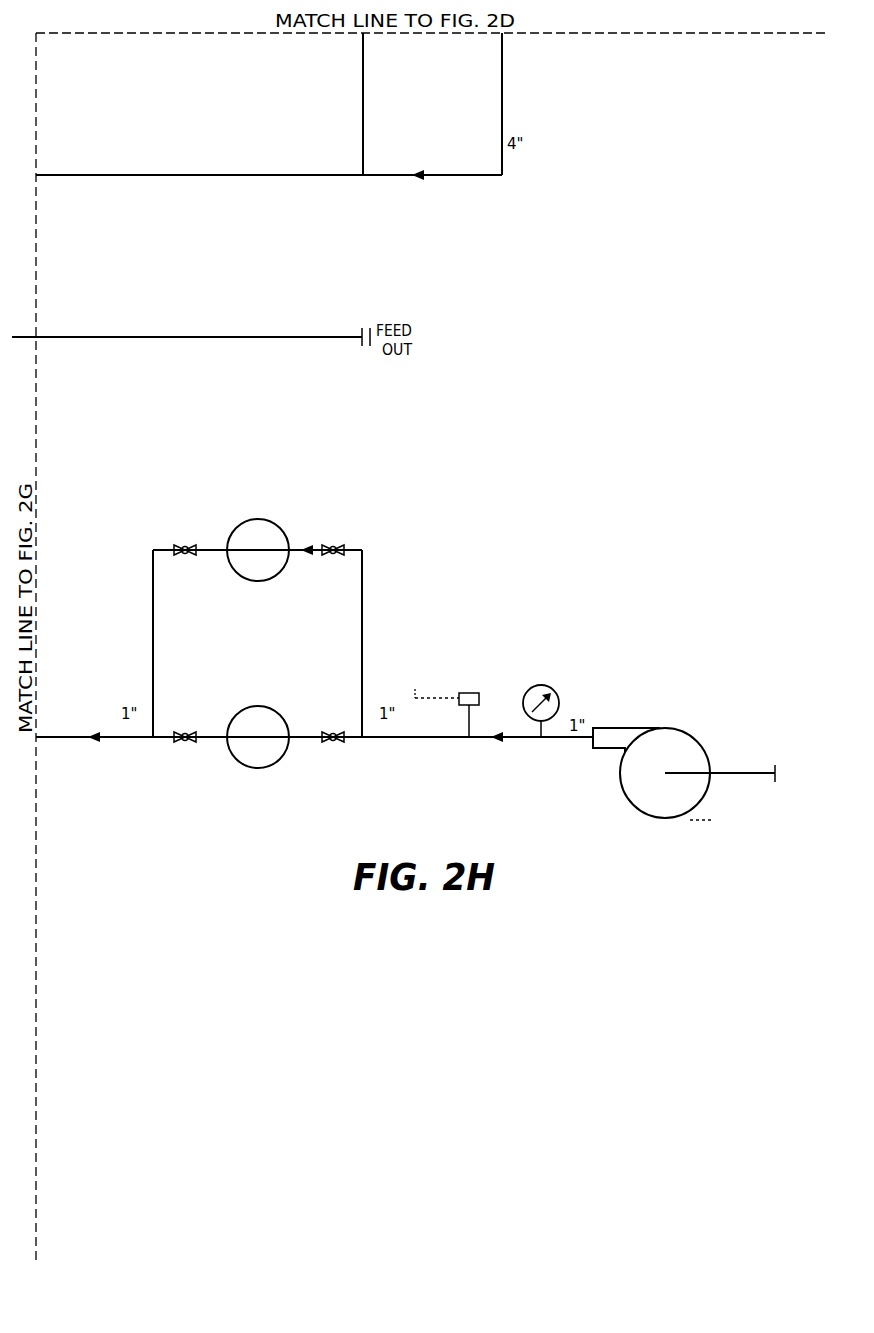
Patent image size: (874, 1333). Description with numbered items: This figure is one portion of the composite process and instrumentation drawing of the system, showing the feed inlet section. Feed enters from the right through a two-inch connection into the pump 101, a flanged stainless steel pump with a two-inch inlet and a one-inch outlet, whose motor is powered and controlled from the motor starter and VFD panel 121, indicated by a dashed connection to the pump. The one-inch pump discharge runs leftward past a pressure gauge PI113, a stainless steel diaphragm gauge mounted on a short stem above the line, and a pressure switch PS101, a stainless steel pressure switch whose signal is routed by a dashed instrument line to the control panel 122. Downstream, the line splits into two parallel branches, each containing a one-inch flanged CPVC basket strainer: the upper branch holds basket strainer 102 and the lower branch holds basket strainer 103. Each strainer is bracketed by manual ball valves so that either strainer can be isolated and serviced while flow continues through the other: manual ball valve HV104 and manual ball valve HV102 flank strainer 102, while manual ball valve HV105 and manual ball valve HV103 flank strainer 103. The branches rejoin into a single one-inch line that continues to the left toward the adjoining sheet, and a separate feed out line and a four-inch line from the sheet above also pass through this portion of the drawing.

The pump 101 is at (705, 748).
The basket strainer 102 is at (258, 527).
The basket strainer 103 is at (258, 714).
The hand valve HV102 is at (333, 578).
The manual ball valve HV103 is at (333, 765).
The manual ball valve HV104 is at (185, 578).
The manual ball valve HV105 is at (185, 765).
The pressure switch PS101 is at (475, 688).
The pressure gauge PI113 is at (541, 684).
The motor starter and VFD panel 121 is at (726, 834).
The control panel 122 is at (426, 674).